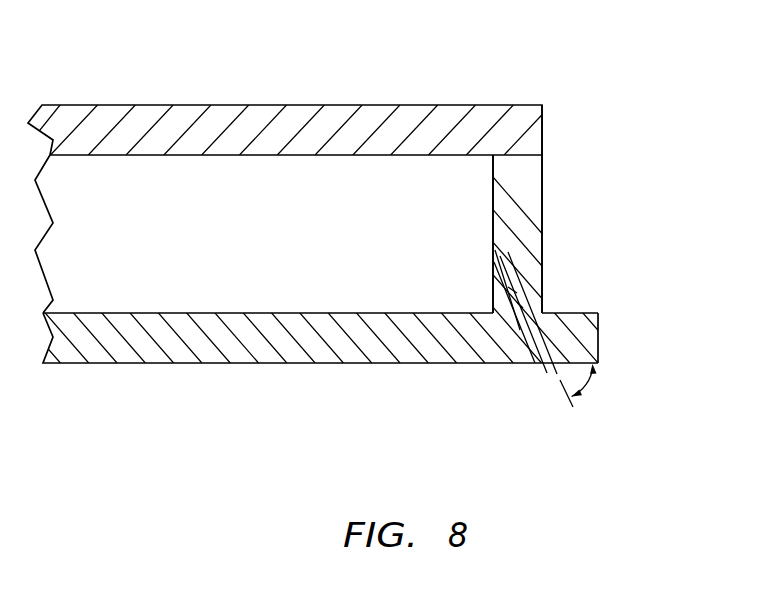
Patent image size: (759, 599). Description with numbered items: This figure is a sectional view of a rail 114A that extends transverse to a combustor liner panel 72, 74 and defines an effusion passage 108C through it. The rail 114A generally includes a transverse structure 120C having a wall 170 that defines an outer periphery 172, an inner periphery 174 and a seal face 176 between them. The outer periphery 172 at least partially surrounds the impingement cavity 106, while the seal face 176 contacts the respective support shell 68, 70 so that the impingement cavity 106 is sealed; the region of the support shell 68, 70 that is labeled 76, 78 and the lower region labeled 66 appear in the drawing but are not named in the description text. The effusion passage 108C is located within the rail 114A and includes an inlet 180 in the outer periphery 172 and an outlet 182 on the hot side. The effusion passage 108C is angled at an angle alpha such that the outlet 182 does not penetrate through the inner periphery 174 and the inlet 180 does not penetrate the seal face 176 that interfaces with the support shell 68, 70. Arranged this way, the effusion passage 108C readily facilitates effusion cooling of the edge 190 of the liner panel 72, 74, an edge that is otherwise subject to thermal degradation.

The support shell 76 is at (285, 85).
The support shell 78 is at (285, 85).
The support shell 68 is at (285, 85).
The support shell 70 is at (358, 45).
The seal face 176 is at (529, 144).
The impingement cavity 106 is at (135, 243).
The wall 170 is at (327, 243).
The rail 114A is at (523, 243).
The transverse structure 120C is at (565, 232).
The outer periphery 172 is at (542, 290).
The inner periphery 174 is at (493, 187).
The inlet 180 is at (493, 268).
The outlet 182 is at (552, 365).
The effusion passage 108C is at (518, 328).
The lower plate 66 is at (375, 302).
The liner panel 72 is at (375, 302).
The liner panel 74 is at (283, 449).
The edge 190 is at (598, 344).